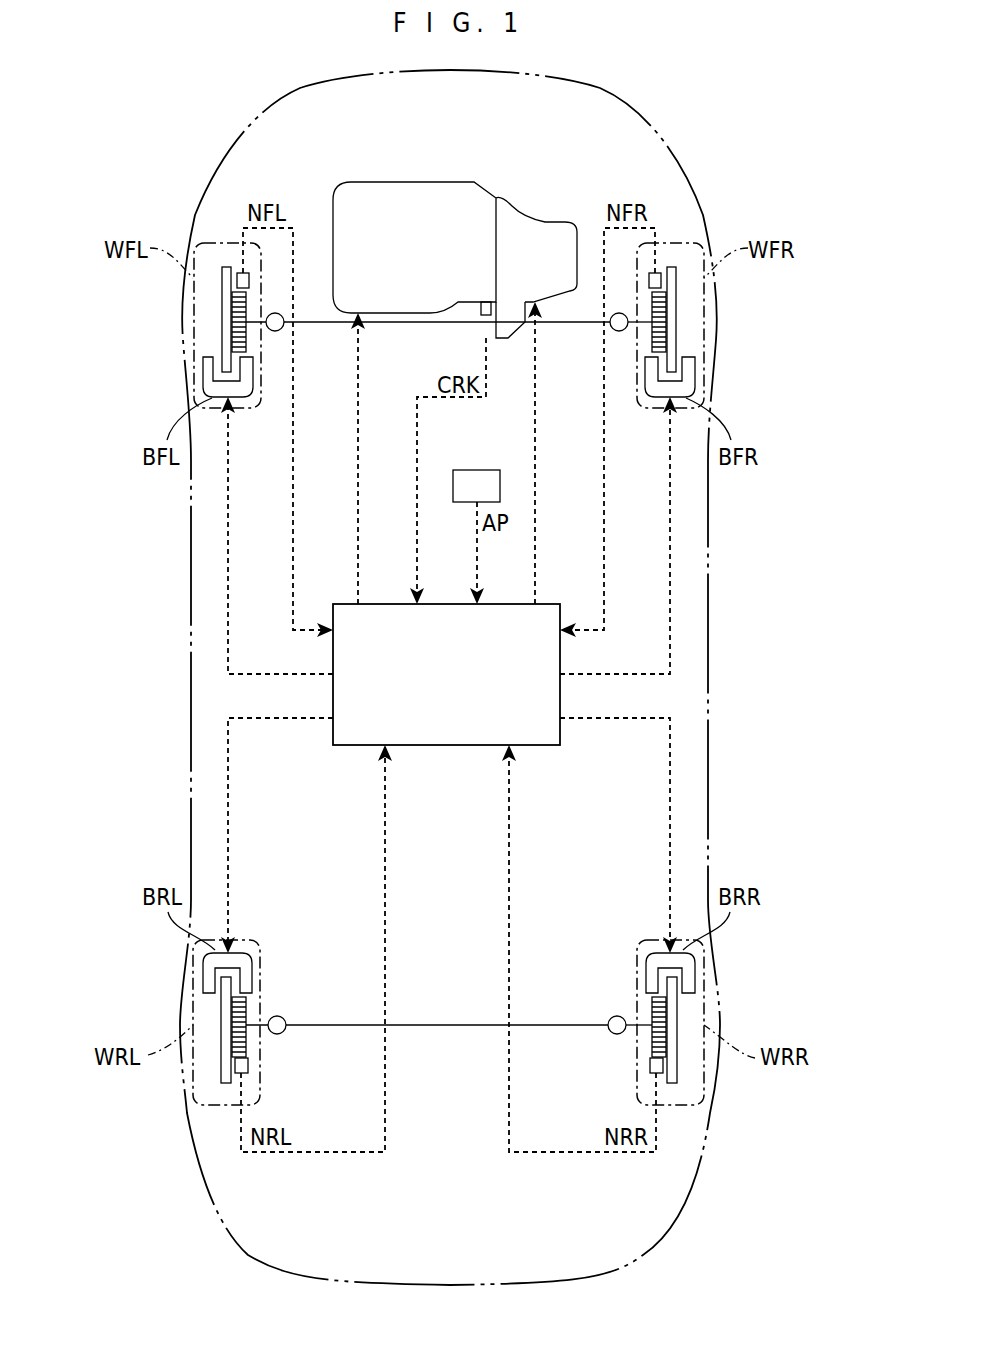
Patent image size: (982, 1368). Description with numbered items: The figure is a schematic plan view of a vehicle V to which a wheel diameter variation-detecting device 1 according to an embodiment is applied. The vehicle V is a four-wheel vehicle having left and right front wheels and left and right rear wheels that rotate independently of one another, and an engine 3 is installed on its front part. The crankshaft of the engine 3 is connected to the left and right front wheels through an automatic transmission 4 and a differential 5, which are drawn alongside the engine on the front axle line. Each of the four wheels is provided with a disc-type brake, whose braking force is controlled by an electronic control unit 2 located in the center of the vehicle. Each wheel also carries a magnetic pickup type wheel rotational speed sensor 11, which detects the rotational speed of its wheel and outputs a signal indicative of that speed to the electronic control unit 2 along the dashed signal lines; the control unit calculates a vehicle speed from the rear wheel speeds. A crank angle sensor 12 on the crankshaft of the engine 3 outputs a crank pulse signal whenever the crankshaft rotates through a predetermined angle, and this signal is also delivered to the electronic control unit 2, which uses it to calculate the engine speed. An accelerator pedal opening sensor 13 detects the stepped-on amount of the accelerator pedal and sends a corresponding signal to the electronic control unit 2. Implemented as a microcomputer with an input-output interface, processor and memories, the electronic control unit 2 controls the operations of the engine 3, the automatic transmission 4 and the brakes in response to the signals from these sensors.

The wheel diameter variation-detecting device 1 is at (126, 707).
The ECU 2 is at (352, 747).
The engine 3 is at (378, 182).
The automatic transmission 4 is at (527, 208).
The differential 5 is at (500, 343).
The wheel rotational speed sensor 11 is at (242, 273).
The crank angle sensor 12 is at (480, 306).
The accelerator pedal opening sensor 13 is at (470, 470).
The vehicle V is at (704, 645).